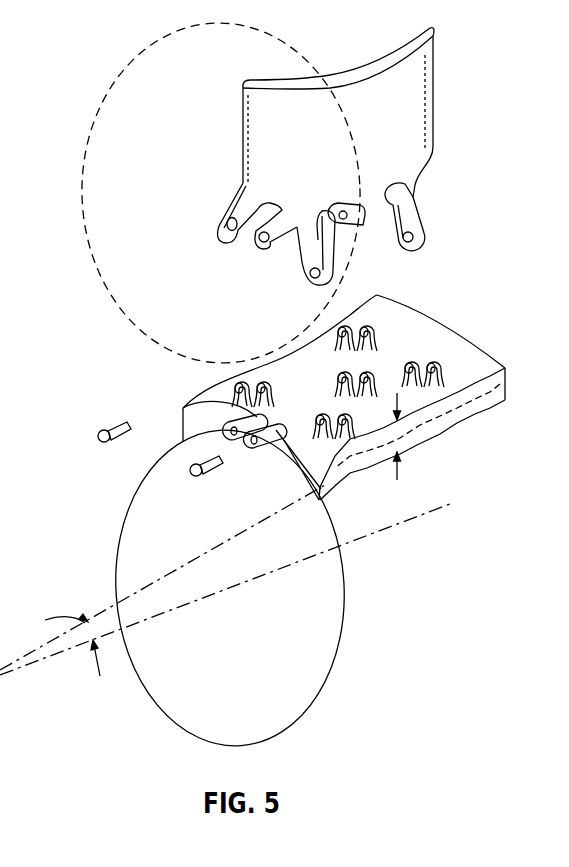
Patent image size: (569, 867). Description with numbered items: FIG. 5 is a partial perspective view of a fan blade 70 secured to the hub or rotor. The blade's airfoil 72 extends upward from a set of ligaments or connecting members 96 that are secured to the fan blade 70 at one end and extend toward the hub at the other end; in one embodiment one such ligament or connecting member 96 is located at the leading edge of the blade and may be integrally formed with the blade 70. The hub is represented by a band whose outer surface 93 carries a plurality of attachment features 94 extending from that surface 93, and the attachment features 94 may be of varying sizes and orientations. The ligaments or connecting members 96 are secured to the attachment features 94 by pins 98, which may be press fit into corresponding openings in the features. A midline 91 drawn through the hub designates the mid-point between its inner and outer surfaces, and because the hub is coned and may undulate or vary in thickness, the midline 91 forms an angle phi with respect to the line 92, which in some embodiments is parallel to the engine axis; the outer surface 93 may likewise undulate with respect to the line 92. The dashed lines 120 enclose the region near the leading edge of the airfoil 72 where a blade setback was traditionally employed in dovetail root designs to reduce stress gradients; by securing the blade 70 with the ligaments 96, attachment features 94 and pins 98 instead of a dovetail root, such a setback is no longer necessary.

The fan blade 70 is at (270, 70).
The airfoil 72 is at (422, 97).
The ligaments or connecting members 96 is at (228, 208).
The dashed lines 120 is at (121, 319).
The midline 91 is at (480, 404).
The line 92 is at (393, 528).
The surface 93 is at (417, 323).
The attachment features 94 is at (450, 377).
The pins 98 is at (112, 462).